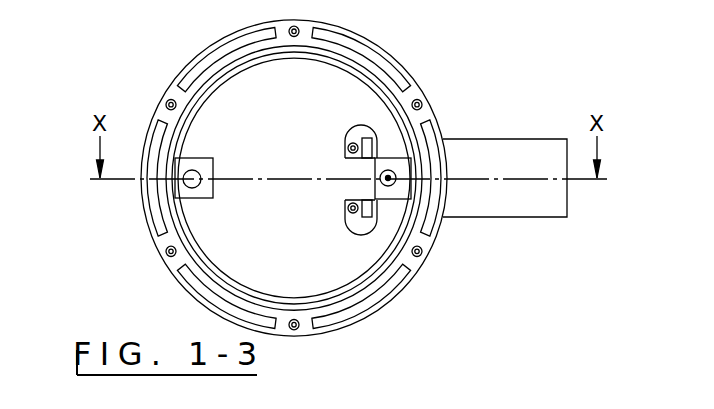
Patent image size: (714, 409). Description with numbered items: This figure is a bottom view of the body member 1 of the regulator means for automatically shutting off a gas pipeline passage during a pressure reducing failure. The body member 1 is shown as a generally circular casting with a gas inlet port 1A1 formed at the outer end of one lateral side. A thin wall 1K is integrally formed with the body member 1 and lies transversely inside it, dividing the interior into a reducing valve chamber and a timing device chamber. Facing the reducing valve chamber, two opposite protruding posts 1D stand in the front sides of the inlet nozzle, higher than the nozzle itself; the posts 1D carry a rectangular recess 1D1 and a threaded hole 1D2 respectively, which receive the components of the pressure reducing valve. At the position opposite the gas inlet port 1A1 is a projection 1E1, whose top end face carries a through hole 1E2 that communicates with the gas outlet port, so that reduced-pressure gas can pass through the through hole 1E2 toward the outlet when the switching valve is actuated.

The body member 1 is at (407, 62).
The projection 1E1 is at (203, 158).
The through hole 1E2 is at (163, 133).
The thin wall 1K is at (233, 242).
The protruding posts 1D is at (355, 127).
The rectangular recess 1D1 is at (345, 140).
The threaded hole 1D2 is at (348, 210).
The gas inlet port 1A1 is at (393, 174).